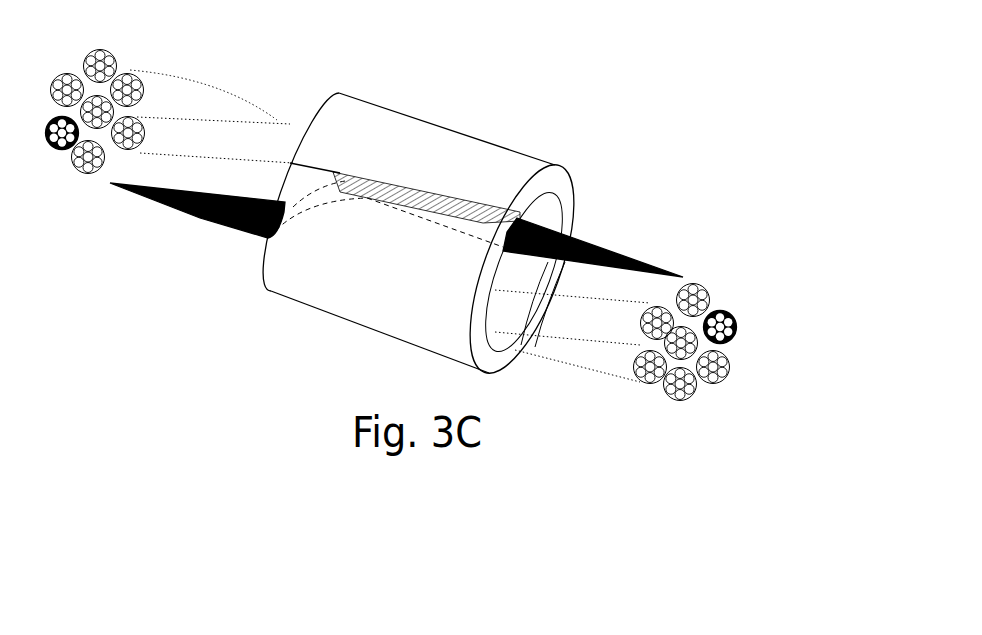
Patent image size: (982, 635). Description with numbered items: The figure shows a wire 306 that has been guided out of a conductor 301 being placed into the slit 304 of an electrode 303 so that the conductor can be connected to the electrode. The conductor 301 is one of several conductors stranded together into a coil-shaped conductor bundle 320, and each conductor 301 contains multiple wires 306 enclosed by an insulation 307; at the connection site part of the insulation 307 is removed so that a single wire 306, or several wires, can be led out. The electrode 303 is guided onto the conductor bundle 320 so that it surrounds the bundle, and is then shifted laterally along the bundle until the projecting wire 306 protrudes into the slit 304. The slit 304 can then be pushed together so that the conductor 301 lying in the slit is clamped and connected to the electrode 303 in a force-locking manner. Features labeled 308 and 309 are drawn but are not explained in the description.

The conductor 301 is at (598, 238).
The electrode 303 is at (455, 137).
The slit 304 is at (350, 170).
The wire 306 is at (735, 308).
The insulation 307 is at (687, 283).
The sleeve edge 308 is at (258, 262).
The sleeve bore 309 is at (487, 363).
The conductor bundle 320 is at (777, 283).